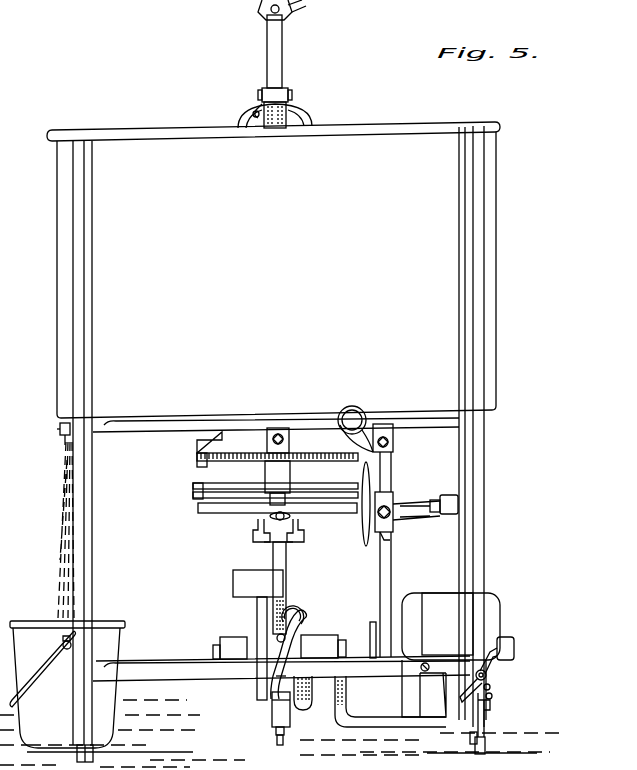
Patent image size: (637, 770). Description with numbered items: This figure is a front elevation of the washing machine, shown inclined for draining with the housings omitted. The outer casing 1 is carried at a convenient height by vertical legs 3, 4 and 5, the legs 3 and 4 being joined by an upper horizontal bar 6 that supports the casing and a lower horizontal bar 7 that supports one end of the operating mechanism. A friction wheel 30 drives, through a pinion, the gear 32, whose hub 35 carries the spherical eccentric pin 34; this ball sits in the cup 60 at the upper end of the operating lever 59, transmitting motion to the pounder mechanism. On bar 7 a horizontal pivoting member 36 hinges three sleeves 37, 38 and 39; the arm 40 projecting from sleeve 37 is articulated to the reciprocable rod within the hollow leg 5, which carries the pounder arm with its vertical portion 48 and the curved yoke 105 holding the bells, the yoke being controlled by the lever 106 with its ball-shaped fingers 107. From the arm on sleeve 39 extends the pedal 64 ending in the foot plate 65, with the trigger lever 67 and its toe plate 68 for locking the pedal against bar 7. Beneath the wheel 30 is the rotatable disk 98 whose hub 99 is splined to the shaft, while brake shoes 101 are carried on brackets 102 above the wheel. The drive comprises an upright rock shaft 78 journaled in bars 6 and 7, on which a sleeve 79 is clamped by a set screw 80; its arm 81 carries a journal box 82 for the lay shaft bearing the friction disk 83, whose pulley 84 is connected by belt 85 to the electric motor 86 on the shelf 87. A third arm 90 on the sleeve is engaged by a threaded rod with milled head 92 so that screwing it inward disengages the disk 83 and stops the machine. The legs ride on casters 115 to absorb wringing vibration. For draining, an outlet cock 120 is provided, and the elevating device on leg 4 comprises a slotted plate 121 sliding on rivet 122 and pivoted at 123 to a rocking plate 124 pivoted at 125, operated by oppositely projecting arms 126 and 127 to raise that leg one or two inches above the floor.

The outer casing 1 is at (276, 275).
The leg 3 is at (79, 519).
The leg 4 is at (482, 562).
The leg 5 is at (274, 730).
The horizontal bar 6 is at (131, 430).
The horizontal bar 7 is at (148, 677).
The friction wheel 30 is at (198, 490).
The gear 32 is at (216, 462).
The eccentric pin 34 is at (291, 517).
The hub 35 is at (290, 476).
The pivoting member 36 is at (216, 642).
The sleeve 37 is at (318, 637).
The sleeve 38 is at (280, 655).
The sleeve 39 is at (226, 636).
The arm 40 is at (305, 604).
The vertical portion 48 is at (282, 68).
The operating lever 59 is at (286, 560).
The cup 60 is at (263, 541).
The pedal 64 is at (256, 620).
The foot plate 65 is at (236, 582).
The trigger lever 67 is at (290, 672).
The toe plate 68 is at (300, 620).
The rock shaft 78 is at (392, 568).
The sleeve 79 is at (392, 534).
The set screw 80 is at (392, 504).
The arm 81 is at (426, 518).
The journal box 82 is at (426, 498).
The friction disk 83 is at (362, 520).
The pulley 84 is at (377, 480).
The belt 85 is at (380, 576).
The electric motor 86 is at (451, 655).
The shelf 87 is at (386, 714).
The third arm 90 is at (372, 430).
The milled head 92 is at (352, 410).
The rotatable disk 98 is at (205, 514).
The hub 99 is at (295, 542).
The brake shoe 101 is at (196, 462).
The bracket 102 is at (204, 440).
The curved yoke 105 is at (300, 114).
The lever 106 is at (262, 86).
The ball-shaped finger 107 is at (256, 108).
The caster 115 is at (282, 746).
The outlet cock 120 is at (59, 431).
The slotted plate 121 is at (487, 746).
The rivet 122 is at (486, 722).
The pivot 123 is at (493, 697).
The rocking plate 124 is at (491, 687).
The pivot 125 is at (487, 674).
The arm 126 is at (500, 640).
The arm 127 is at (462, 700).